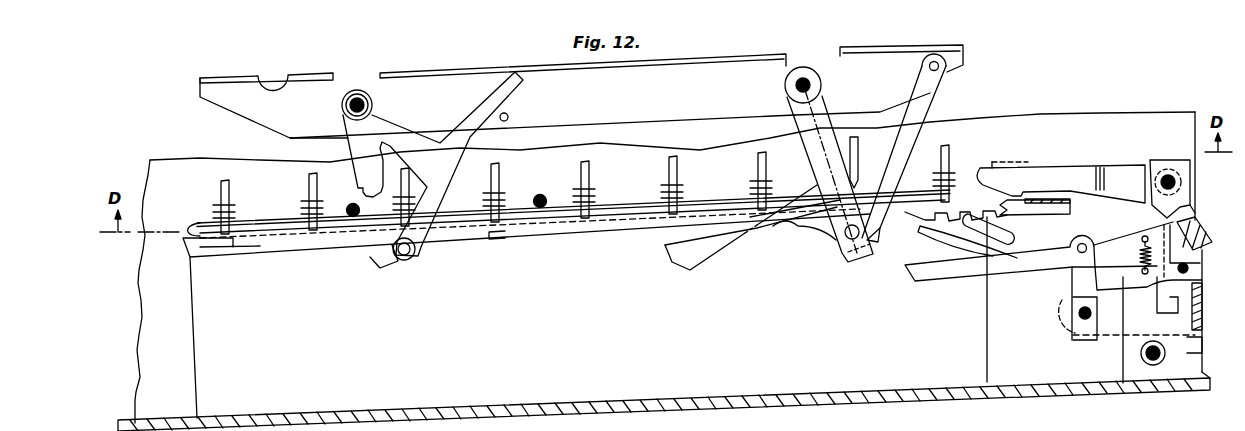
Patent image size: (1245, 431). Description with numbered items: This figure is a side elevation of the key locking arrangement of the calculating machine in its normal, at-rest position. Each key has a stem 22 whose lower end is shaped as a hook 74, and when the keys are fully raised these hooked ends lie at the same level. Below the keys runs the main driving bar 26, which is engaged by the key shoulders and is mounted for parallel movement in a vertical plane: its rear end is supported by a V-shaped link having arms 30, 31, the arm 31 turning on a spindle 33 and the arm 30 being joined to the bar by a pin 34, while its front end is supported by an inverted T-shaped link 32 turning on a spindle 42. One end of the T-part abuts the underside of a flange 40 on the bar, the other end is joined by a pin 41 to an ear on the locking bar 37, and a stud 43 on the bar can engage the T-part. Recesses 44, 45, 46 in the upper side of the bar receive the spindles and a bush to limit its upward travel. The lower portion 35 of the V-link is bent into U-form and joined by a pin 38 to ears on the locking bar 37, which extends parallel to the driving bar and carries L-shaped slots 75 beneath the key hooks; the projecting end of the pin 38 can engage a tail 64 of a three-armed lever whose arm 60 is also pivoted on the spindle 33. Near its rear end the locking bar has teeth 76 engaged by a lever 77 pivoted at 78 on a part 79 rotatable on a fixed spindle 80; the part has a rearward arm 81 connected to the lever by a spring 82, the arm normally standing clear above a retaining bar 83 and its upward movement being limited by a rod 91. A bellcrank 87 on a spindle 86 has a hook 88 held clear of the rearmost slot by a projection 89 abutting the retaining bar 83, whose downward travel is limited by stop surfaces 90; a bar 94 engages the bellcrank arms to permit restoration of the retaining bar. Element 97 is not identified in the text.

The key stem 22 is at (593, 190).
The main driving bar 26 is at (717, 77).
The arm of V-shaped link 30 is at (922, 92).
The arm of V-shaped link 31 is at (817, 112).
The link 32 is at (422, 149).
The spindle 33 is at (806, 82).
The pin 34 is at (938, 63).
The lower portion of V-link 35 is at (849, 262).
The locking bar 37 is at (567, 232).
The pin 38 is at (840, 233).
The flange 40 is at (678, 57).
The pin 41 is at (404, 260).
The spindle 42 is at (358, 94).
The stud or projection 43 is at (508, 116).
The recess 44 is at (800, 67).
The recess 45 is at (350, 92).
The recess 46 is at (277, 90).
The arm of three-armed lever 60 is at (922, 229).
The tail 64 is at (872, 246).
The hook 74 is at (498, 222).
The slot 75 is at (627, 236).
The teeth 76 is at (970, 222).
The lever 77 is at (995, 256).
The pivot 78 is at (1067, 262).
The part 79 is at (1075, 283).
The fixed spindle 80 is at (1085, 319).
The arm 81 is at (1123, 383).
The spring 82 is at (1173, 256).
The retaining bar 83 is at (1202, 311).
The spindle 86 is at (1176, 182).
The bellcrank 87 is at (1125, 183).
The hook 88 is at (1007, 187).
The projection 89 is at (1180, 290).
The stop surfaces 90 is at (1202, 350).
The rod 91 is at (1189, 269).
The bar 94 is at (1203, 229).
The guide 97 is at (228, 243).